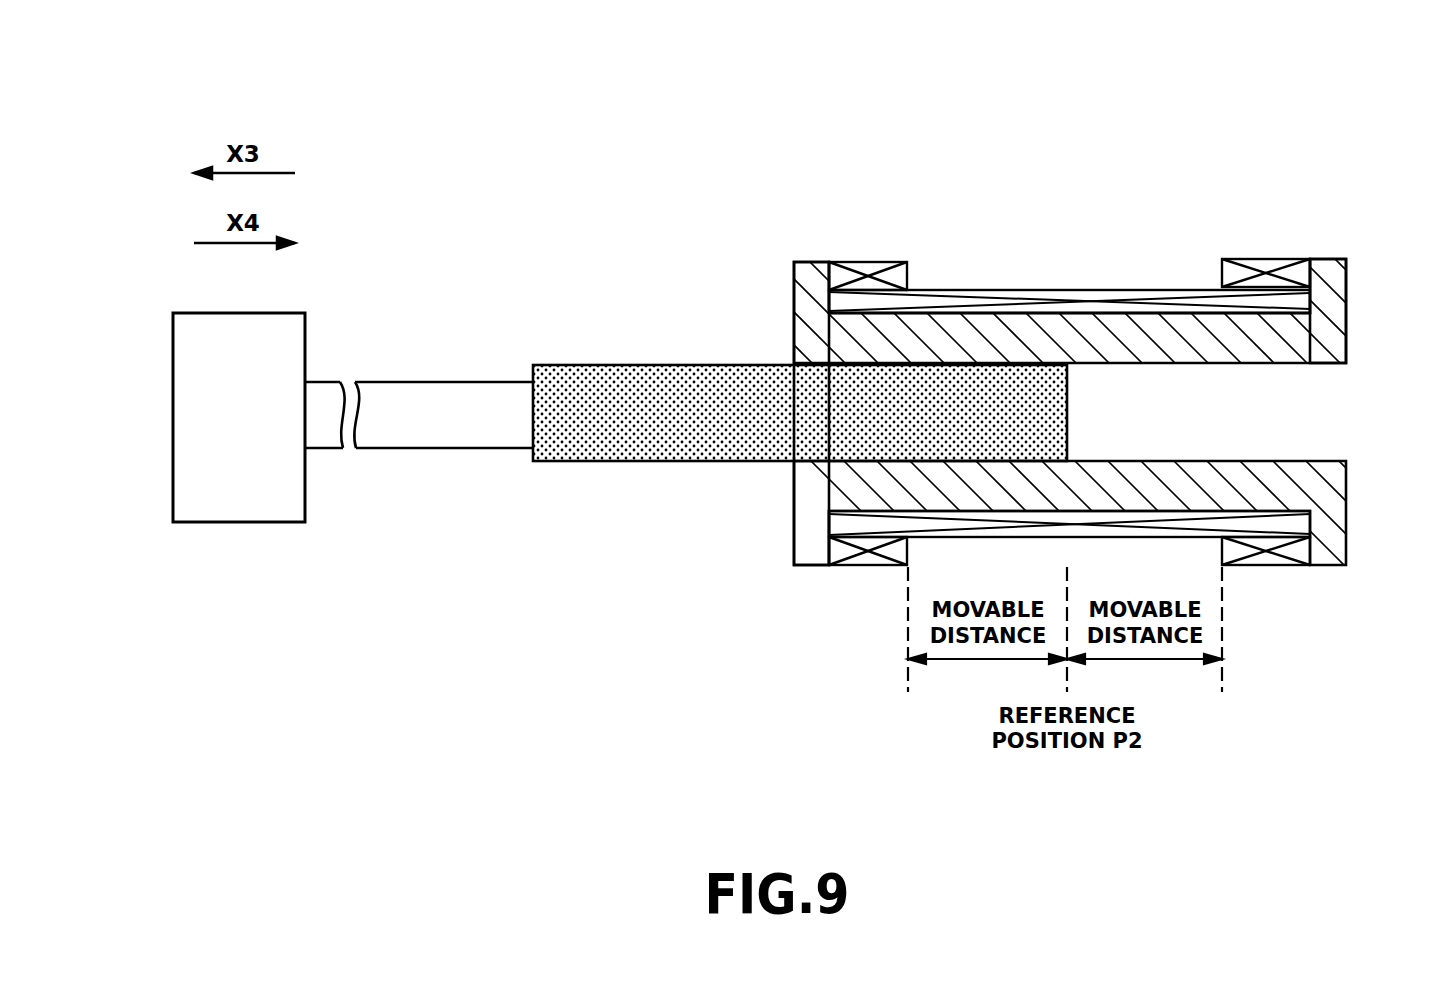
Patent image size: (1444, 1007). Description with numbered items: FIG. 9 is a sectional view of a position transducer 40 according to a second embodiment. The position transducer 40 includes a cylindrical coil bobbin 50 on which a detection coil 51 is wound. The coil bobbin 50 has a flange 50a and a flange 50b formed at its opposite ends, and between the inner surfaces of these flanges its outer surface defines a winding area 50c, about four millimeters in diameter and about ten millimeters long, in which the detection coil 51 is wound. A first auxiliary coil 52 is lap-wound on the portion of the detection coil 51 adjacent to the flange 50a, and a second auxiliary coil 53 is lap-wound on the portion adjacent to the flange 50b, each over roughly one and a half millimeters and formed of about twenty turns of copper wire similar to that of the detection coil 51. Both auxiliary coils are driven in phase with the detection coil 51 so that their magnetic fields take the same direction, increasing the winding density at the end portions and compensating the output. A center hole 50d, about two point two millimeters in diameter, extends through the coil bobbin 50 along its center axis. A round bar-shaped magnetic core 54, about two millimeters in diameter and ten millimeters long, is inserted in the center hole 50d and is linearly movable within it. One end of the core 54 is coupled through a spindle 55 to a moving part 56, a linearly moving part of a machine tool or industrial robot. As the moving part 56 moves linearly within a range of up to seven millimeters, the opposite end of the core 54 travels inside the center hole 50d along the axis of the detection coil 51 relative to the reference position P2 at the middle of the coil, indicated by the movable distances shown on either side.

The position transducer 40 is at (672, 140).
The coil bobbin 50 is at (990, 335).
The flange 50a is at (807, 262).
The flange 50b is at (1330, 275).
The winding area 50c is at (1162, 313).
The center hole 50d is at (1328, 365).
The detection coil 51 is at (1076, 288).
The first auxiliary coil 52 is at (884, 262).
The second auxiliary coil 53 is at (1263, 259).
The magnetic core 54 is at (652, 462).
The spindle 55 is at (388, 432).
The moving part 56 is at (237, 523).